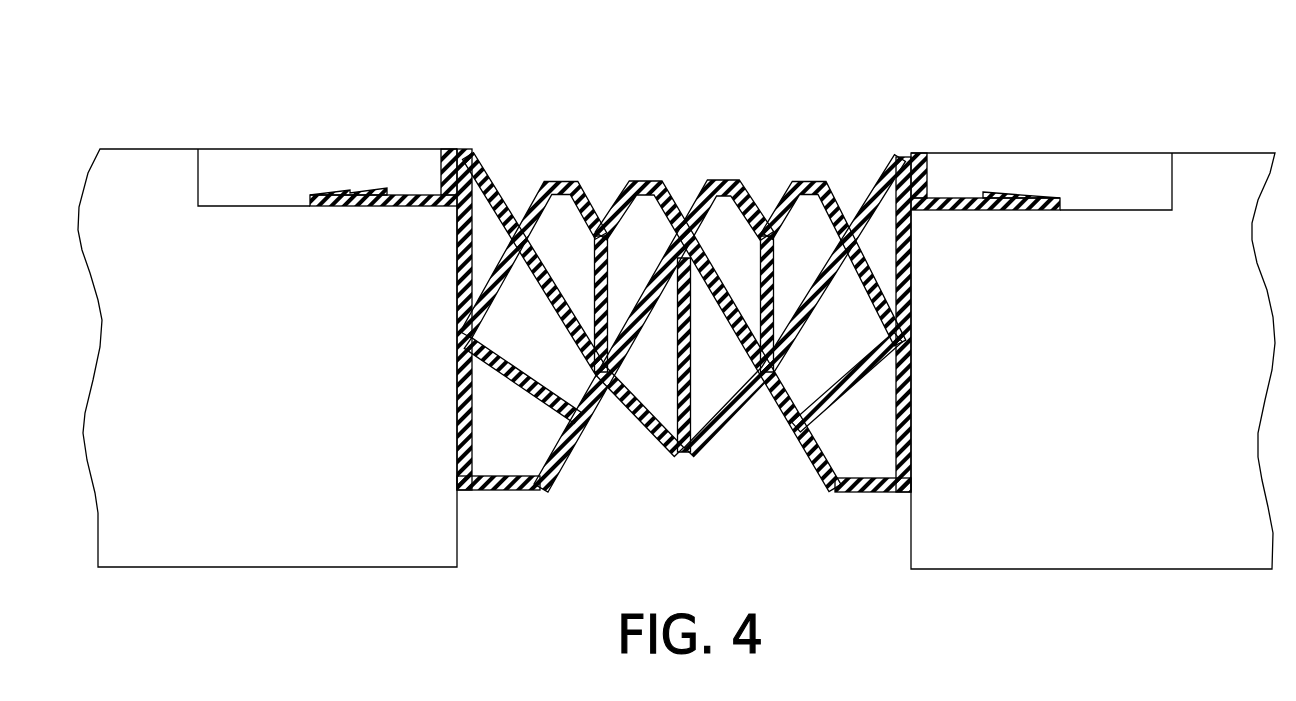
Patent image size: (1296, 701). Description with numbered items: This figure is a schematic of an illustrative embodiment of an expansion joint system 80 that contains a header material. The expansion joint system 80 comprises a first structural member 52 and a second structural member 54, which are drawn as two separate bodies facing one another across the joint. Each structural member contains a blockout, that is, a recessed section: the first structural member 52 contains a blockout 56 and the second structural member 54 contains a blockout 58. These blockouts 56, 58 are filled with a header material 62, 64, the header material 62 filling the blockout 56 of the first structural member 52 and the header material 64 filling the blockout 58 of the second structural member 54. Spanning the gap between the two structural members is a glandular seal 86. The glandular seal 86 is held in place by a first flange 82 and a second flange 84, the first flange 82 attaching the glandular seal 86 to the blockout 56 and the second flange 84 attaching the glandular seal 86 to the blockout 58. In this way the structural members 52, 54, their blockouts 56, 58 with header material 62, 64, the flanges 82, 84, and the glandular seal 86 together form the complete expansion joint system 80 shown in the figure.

The first structural member 52 is at (178, 150).
The second structural member 54 is at (1192, 154).
The blockout 56 is at (201, 175).
The blockout 58 is at (1172, 177).
The header material 62 is at (320, 162).
The header material 64 is at (1072, 162).
The expansion joint system 80 is at (617, 62).
The first flange 82 is at (403, 197).
The second flange 84 is at (948, 198).
The glandular seal 86 is at (645, 182).